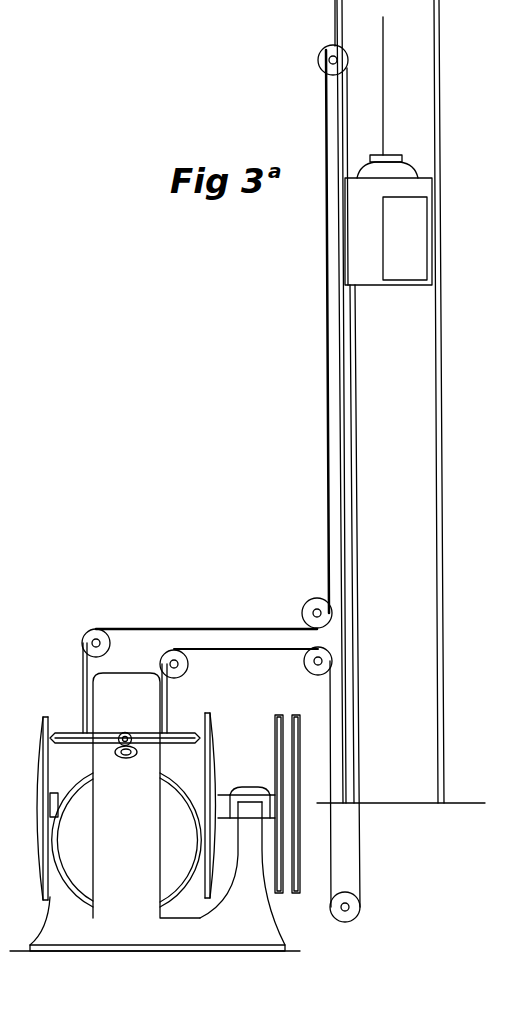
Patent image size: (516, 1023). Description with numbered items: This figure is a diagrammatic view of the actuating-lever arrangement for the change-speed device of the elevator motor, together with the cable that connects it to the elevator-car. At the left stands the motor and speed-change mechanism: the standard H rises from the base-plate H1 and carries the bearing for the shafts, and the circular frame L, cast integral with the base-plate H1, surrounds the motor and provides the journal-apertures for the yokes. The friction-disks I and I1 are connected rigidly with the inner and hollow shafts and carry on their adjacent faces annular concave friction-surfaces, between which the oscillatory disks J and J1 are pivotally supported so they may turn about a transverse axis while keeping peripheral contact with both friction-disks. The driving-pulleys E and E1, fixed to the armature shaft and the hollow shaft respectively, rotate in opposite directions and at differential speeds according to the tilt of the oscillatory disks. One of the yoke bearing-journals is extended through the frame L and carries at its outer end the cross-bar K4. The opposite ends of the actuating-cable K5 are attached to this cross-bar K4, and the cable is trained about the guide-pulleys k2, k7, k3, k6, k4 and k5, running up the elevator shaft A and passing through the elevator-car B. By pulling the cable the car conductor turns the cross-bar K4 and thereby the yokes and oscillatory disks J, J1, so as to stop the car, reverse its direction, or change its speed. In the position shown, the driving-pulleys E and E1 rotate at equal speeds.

The elevator shaft A is at (441, 456).
The elevator-car B is at (388, 151).
The guide-pulley k4 is at (320, 50).
The guide-pulley k3 is at (310, 598).
The guide-pulley k2 is at (97, 629).
The actuating-cable K5 is at (219, 627).
The guide-pulley k7 is at (189, 666).
The guide-pulley k6 is at (306, 669).
The guide-pulley k5 is at (360, 912).
The cross-bar K4 is at (147, 733).
The oscillatory disk J is at (62, 731).
The circular frame L is at (146, 795).
The oscillatory disk J1 is at (125, 840).
The friction-disk I is at (40, 781).
The friction-disk I1 is at (218, 738).
The driving-pulley E1 is at (246, 779).
The driving-pulley E is at (295, 804).
The standard H is at (242, 873).
The base-plate H1 is at (155, 924).